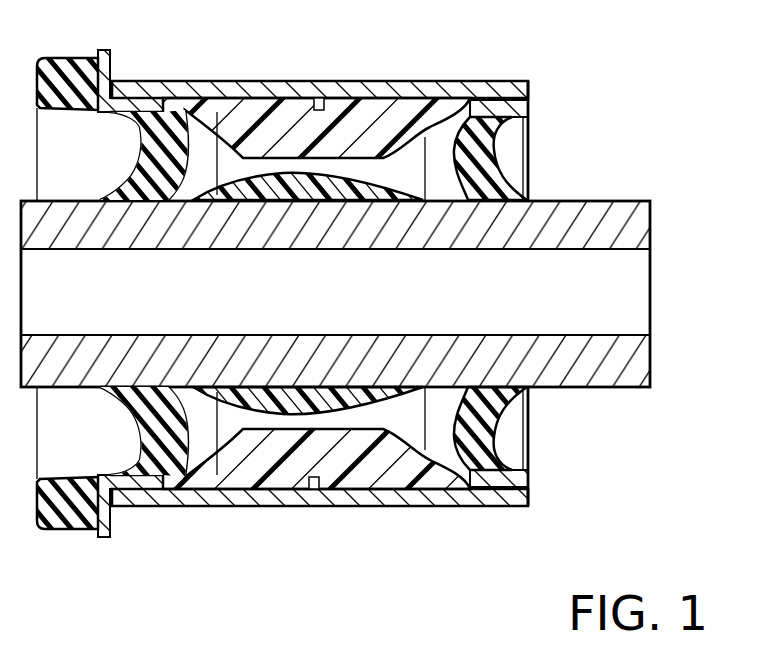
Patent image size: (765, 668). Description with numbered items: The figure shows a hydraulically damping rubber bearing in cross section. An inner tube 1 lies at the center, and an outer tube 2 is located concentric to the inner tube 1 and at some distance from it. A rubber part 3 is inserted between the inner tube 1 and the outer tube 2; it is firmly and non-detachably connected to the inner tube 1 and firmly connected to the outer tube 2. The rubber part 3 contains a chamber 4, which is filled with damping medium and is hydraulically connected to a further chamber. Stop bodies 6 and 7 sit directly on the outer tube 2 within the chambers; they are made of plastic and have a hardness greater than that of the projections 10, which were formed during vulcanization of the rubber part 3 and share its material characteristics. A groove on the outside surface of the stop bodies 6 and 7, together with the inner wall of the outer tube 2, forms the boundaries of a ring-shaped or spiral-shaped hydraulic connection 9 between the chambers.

The inner tube 1 is at (594, 228).
The outer tube 2 is at (394, 98).
The rubber part 3 is at (478, 445).
The chamber 4 is at (437, 157).
The stop body 6 is at (258, 152).
The stop body 7 is at (242, 468).
The hydraulic connection 9 is at (320, 100).
The projections 10 is at (387, 400).